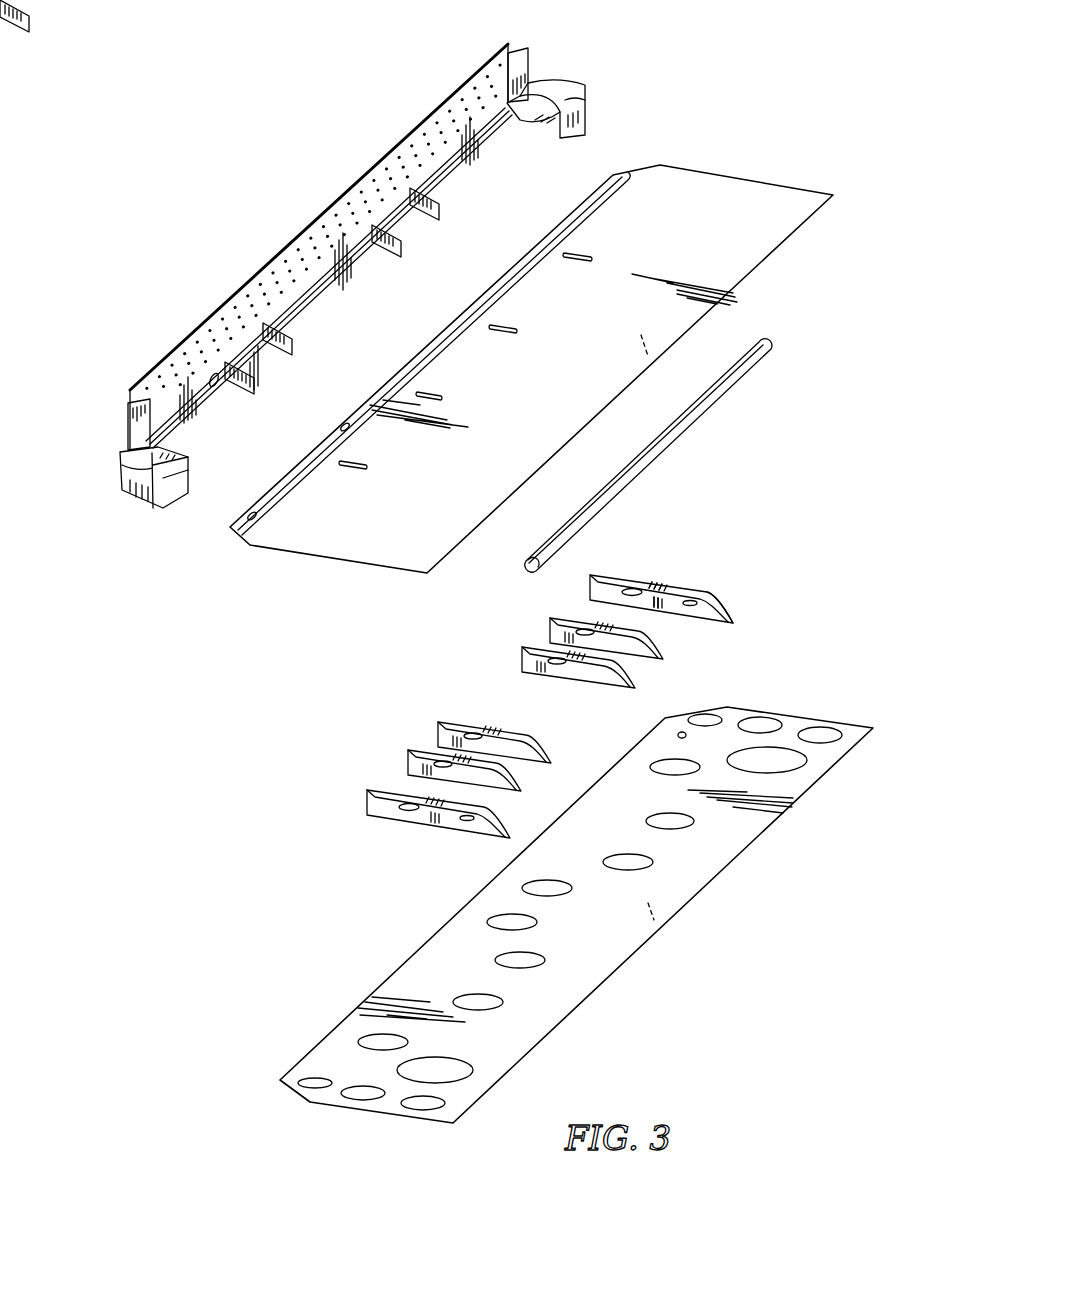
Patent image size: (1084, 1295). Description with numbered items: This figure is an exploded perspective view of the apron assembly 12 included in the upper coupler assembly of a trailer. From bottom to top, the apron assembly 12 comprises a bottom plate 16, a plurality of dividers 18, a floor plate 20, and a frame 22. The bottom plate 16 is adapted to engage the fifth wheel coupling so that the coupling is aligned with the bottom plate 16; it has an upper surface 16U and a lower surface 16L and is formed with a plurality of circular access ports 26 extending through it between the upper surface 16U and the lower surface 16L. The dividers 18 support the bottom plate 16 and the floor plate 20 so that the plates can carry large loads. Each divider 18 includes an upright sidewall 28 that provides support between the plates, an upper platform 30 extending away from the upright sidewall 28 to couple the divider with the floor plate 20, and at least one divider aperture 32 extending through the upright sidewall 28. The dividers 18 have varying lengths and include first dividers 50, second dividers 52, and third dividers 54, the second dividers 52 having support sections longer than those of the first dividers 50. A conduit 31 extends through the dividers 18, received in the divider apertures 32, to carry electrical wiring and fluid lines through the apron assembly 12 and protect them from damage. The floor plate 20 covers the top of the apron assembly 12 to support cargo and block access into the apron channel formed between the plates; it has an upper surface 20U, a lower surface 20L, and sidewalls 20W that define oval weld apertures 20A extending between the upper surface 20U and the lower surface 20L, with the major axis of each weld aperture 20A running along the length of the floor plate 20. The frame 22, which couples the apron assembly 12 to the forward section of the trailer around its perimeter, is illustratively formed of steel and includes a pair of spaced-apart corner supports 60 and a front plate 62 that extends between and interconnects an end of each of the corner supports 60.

The apron assembly 12 is at (199, 110).
The bottom plate 16 is at (806, 699).
The upper surface 16U is at (723, 843).
The lower surface 16L is at (655, 923).
The dividers 18 is at (695, 549).
The floor plate 20 is at (761, 168).
The weld apertures 20A is at (496, 310).
The sidewalls 20W is at (575, 253).
The upper surface 20U is at (758, 240).
The lower surface 20L is at (648, 358).
The frame 22 is at (574, 67).
The access ports 26 is at (480, 992).
The upright sidewall 28 is at (660, 606).
The upper platform 30 is at (655, 585).
The conduit 31 is at (760, 365).
The divider aperture 32 is at (636, 605).
The first dividers 50 is at (510, 660).
The second dividers 52 is at (536, 630).
The third dividers 54 is at (572, 590).
The corner supports 60 is at (585, 105).
The front plate 62 is at (168, 373).